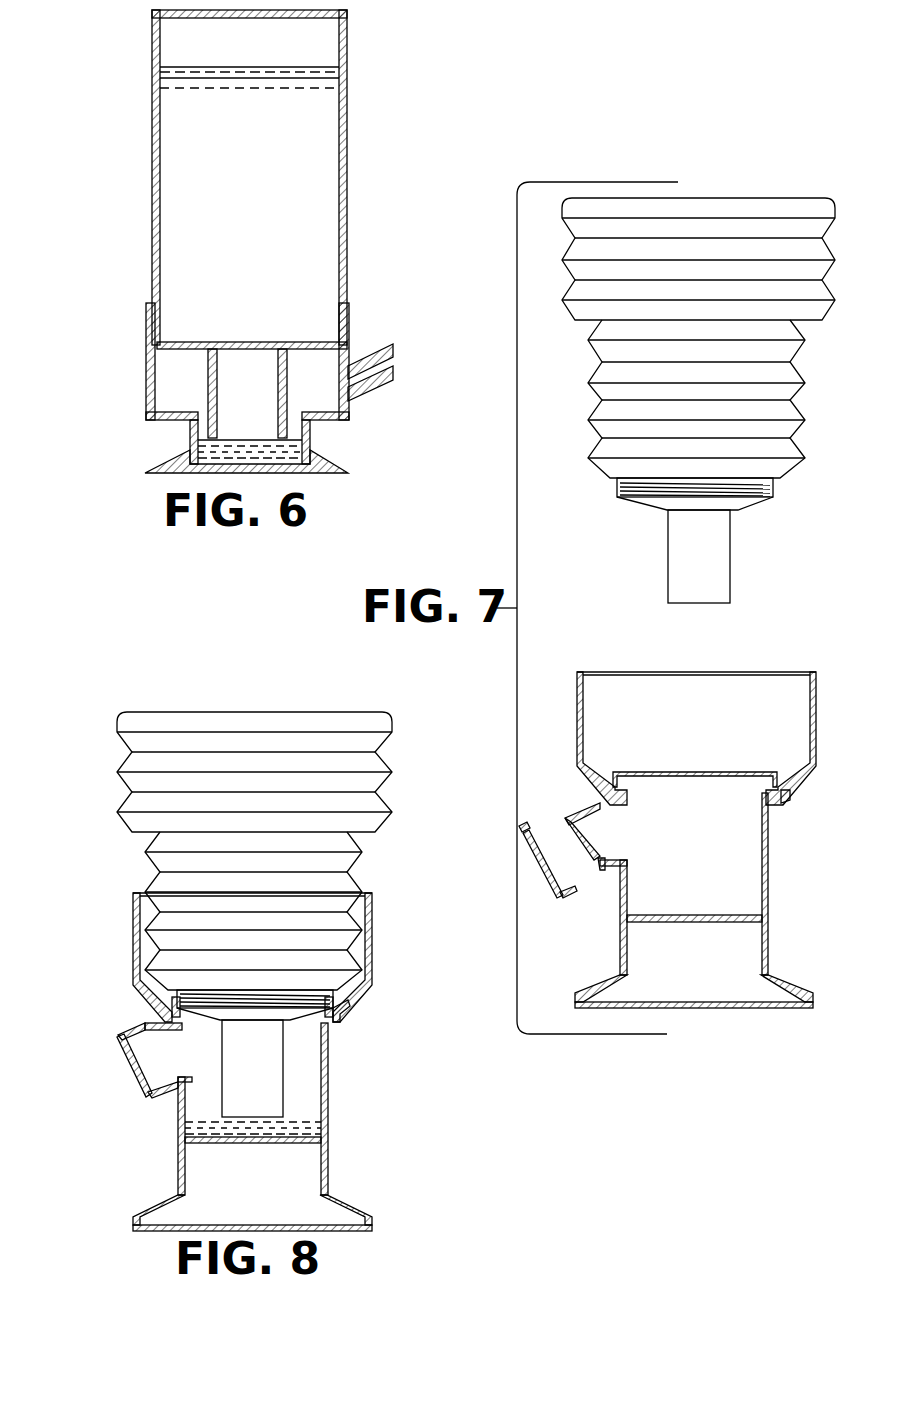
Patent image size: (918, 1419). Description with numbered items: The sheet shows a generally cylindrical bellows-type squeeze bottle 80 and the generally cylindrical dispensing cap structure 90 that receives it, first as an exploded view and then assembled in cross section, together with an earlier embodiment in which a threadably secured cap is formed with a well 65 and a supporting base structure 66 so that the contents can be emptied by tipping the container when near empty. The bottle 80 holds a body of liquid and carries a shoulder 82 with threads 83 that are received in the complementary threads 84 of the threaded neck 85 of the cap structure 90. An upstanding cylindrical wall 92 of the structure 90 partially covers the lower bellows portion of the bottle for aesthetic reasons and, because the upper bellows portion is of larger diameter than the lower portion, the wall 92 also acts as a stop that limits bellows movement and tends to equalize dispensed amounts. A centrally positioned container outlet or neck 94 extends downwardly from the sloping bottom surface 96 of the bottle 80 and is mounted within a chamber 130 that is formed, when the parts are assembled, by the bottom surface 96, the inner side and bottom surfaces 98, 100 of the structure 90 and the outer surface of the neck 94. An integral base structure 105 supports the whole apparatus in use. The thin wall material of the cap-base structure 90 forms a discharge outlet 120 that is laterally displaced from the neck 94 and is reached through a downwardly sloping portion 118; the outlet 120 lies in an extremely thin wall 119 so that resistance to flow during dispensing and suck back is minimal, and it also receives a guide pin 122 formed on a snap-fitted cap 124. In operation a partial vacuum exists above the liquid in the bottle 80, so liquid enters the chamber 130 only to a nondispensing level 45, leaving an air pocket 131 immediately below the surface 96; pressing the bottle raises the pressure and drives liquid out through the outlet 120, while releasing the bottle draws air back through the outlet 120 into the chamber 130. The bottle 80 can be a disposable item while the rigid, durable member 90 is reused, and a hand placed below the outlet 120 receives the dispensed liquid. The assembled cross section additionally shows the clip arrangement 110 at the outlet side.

In FIG. 6, the level 45 is at (200, 430).
In FIG. 8, the level 45 is at (205, 1113).
In FIG. 6, the well 65 is at (310, 442).
In FIG. 6, the supporting base structure 66 is at (335, 465).
In FIG. 7, the bellows-type squeeze bottle 80 is at (728, 176).
In FIG. 8, the bellows-type squeeze bottle 80 is at (94, 728).
In FIG. 7, the shoulder 82 is at (635, 498).
In FIG. 7, the threads 83 is at (775, 488).
In FIG. 7, the complementary threads 84 is at (620, 776).
In FIG. 7, the threaded neck 85 is at (786, 780).
In FIG. 8, the threaded neck 85 is at (346, 1008).
In FIG. 7, the dispensing cap structure 90 is at (570, 710).
In FIG. 7, the upstanding cylindrical wall 92 is at (585, 711).
In FIG. 8, the upstanding cylindrical wall 92 is at (372, 917).
In FIG. 7, the container outlet or neck 94 is at (720, 596).
In FIG. 8, the container outlet or neck 94 is at (265, 1068).
In FIG. 7, the sloping bottom surface 96 is at (665, 508).
In FIG. 8, the sloping bottom surface 96 is at (215, 1018).
In FIG. 7, the inner side surface 98 is at (768, 857).
In FIG. 8, the inner side surface 98 is at (324, 1052).
In FIG. 7, the bottom surface 100 is at (748, 915).
In FIG. 8, the bottom surface 100 is at (300, 1134).
In FIG. 7, the integral base structure 105 is at (595, 985).
In FIG. 8, the clip assembly 110 is at (170, 1090).
In FIG. 7, the downwardly sloping portion 118 is at (582, 812).
In FIG. 7, the wall 119 is at (560, 824).
In FIG. 7, the discharge outlet 120 is at (598, 837).
In FIG. 7, the guide pin 122 is at (558, 860).
In FIG. 7, the snap-fitted cap 124 is at (543, 888).
In FIG. 8, the chamber 130 is at (312, 1096).
In FIG. 8, the air pocket 131 is at (213, 1078).